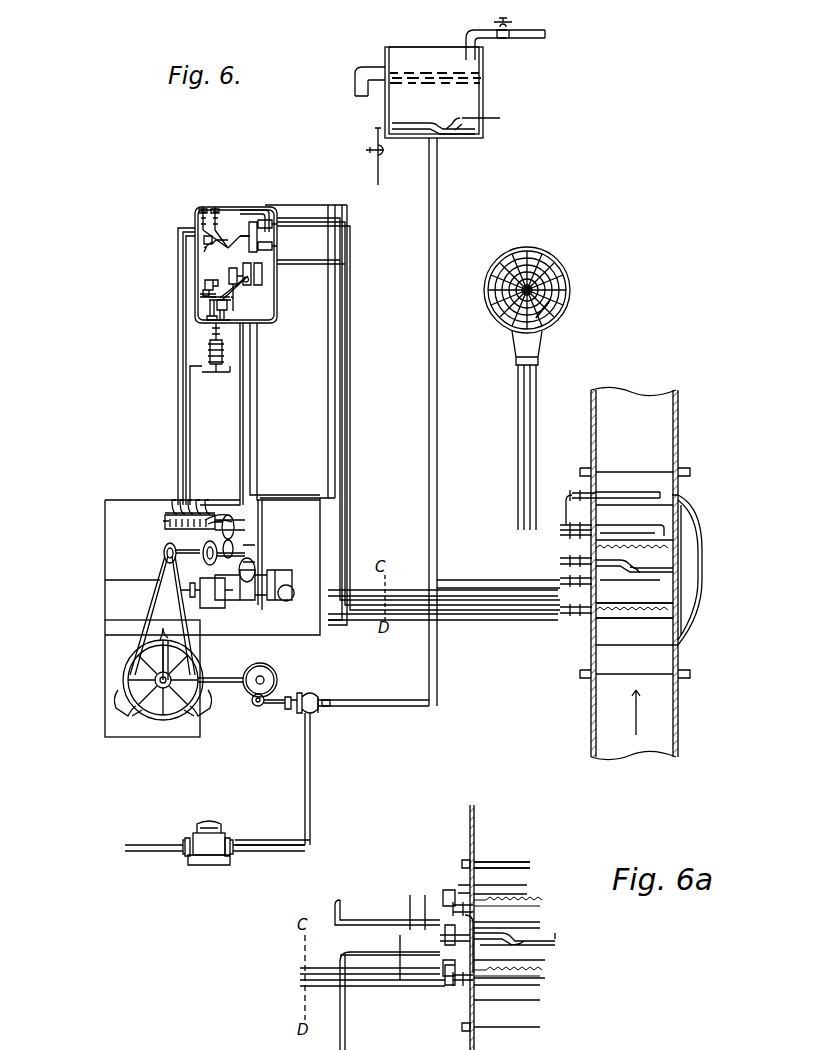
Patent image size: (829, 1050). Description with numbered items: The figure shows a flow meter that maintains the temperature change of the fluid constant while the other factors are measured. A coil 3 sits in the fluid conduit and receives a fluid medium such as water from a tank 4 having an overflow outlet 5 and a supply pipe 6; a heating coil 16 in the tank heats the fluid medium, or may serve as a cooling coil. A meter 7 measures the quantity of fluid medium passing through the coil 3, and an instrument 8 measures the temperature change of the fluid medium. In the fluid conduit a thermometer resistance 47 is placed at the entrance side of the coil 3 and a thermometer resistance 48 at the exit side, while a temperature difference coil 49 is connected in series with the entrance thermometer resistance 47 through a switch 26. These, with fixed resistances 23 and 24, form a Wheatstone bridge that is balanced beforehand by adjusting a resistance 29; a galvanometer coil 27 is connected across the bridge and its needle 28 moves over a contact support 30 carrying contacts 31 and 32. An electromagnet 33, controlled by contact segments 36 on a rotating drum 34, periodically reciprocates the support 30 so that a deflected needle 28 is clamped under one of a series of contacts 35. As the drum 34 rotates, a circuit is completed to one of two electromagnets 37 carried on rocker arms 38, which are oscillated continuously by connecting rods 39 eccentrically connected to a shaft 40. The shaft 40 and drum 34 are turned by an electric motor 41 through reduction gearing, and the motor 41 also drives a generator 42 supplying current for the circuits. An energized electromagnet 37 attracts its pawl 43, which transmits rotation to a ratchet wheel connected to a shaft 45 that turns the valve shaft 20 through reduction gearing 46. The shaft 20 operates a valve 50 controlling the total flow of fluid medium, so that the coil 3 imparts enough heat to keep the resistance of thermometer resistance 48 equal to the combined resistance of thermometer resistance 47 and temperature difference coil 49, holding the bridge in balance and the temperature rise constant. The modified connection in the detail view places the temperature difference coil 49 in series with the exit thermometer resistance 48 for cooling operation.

In FIG. 6, the coil 3 is at (678, 566).
In FIG. 6A, the coil 3 is at (556, 935).
In FIG. 6, the tank 4 is at (483, 97).
In FIG. 6, the overflow outlet 5 is at (355, 85).
In FIG. 6, the supply pipe 6 is at (516, 33).
In FIG. 6, the meter 7 is at (216, 842).
In FIG. 6, the recording or indicating instrument 8 is at (556, 308).
In FIG. 6, the heating coil 16 is at (468, 131).
In FIG. 6, the valve shaft 20 is at (290, 697).
In FIG. 6, the fixed resistance 23 is at (208, 212).
In FIG. 6, the fixed resistance 24 is at (240, 212).
In FIG. 6, the switch 26 is at (203, 246).
In FIG. 6, the galvanometer coil 27 is at (247, 262).
In FIG. 6, the galvanometer needle 28 is at (256, 290).
In FIG. 6, the resistance 29 is at (270, 210).
In FIG. 6, the contact support 30 is at (228, 308).
In FIG. 6, the contact 31 is at (207, 299).
In FIG. 6, the contact 32 is at (234, 297).
In FIG. 6, the electromagnet 33 is at (209, 352).
In FIG. 6, the rotating drum 34 is at (164, 553).
In FIG. 6, the contacts 35 is at (203, 291).
In FIG. 6, the contact segment 36 is at (168, 518).
In FIG. 6, the electromagnets 37 is at (163, 720).
In FIG. 6, the rocker arms 38 is at (163, 640).
In FIG. 6, the connecting rods 39 is at (166, 562).
In FIG. 6, the shaft 40 is at (205, 560).
In FIG. 6, the electric motor 41 is at (284, 564).
In FIG. 6, the generator 42 is at (215, 608).
In FIG. 6, the pawl 43 is at (120, 700).
In FIG. 6, the shaft 45 is at (235, 688).
In FIG. 6, the reduction gearing 46 is at (260, 707).
In FIG. 6, the thermometer resistance 47 is at (660, 606).
In FIG. 6A, the thermometer resistance 47 is at (540, 966).
In FIG. 6, the thermometer resistance 48 is at (688, 524).
In FIG. 6A, the thermometer resistance 48 is at (532, 905).
In FIG. 6, the temperature difference coil 49 is at (628, 491).
In FIG. 6A, the temperature difference coil 49 is at (508, 862).
In FIG. 6, the valve 50 is at (312, 700).